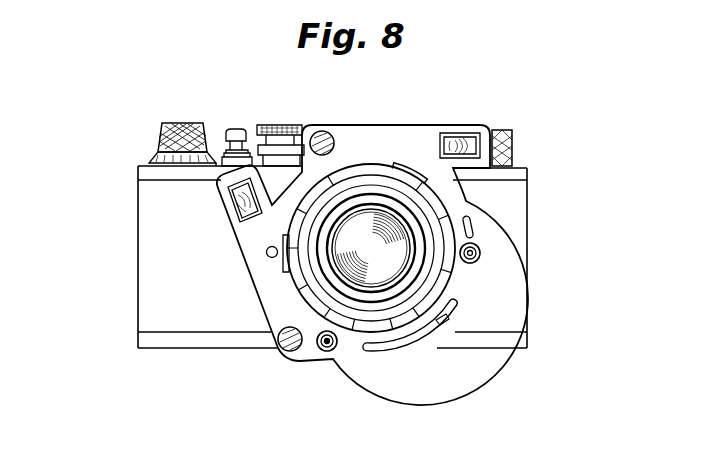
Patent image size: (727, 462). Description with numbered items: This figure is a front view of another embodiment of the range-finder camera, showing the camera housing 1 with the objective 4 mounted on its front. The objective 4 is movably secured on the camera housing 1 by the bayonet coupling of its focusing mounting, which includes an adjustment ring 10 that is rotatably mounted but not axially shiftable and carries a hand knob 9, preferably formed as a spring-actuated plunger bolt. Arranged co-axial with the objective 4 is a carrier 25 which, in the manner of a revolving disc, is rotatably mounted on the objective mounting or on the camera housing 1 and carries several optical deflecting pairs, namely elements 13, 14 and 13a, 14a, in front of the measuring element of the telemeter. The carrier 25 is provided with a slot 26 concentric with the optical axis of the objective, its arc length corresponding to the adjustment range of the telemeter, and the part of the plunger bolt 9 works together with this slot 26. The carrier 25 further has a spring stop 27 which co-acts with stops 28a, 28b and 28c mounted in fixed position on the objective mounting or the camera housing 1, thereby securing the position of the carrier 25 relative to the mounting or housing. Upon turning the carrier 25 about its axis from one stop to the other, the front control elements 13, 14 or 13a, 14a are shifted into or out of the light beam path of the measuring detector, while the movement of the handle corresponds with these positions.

The camera housing 1 is at (194, 322).
The objective 4 is at (363, 258).
The hand knob 9 is at (327, 352).
The adjustment ring 10 is at (473, 228).
The optical deflecting pair 13 is at (462, 144).
The optical deflecting pair 13a is at (235, 198).
The optical deflecting pair 14 is at (313, 134).
The optical deflecting pair 14a is at (285, 347).
The carrier 25 is at (455, 198).
The slot 26 is at (453, 312).
The spring stop 27 is at (267, 253).
The stop 28a is at (405, 355).
The stop 28b is at (396, 163).
The stop 28c is at (283, 268).